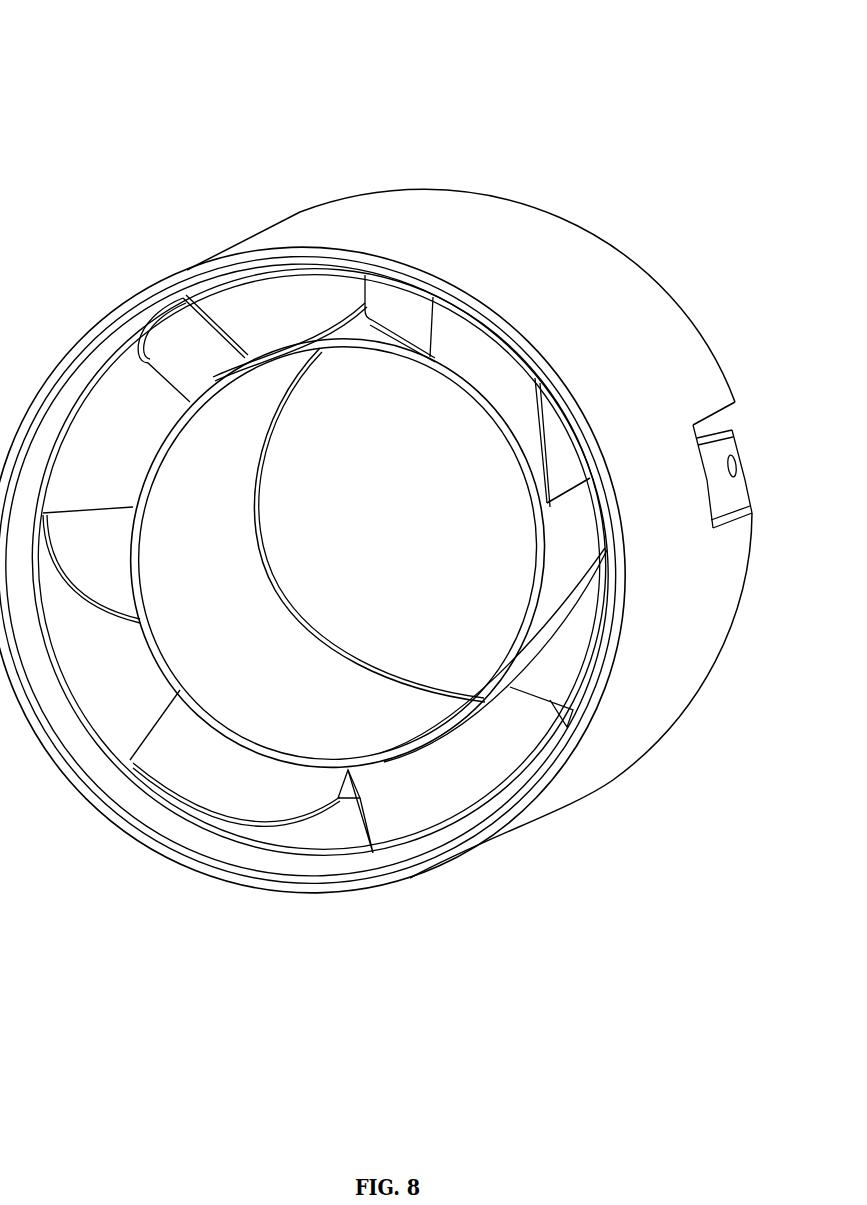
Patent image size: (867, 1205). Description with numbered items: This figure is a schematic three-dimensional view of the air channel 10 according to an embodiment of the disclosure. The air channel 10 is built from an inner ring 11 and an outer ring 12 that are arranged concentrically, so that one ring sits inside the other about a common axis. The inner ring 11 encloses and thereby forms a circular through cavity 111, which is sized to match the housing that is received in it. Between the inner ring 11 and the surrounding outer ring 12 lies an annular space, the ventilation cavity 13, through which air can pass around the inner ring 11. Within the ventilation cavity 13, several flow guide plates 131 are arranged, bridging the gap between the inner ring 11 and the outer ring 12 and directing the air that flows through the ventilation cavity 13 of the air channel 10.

The air channel 10 is at (80, 83).
The inner ring 11 is at (338, 649).
The circular through cavity 111 is at (411, 633).
The outer ring 12 is at (288, 903).
The ventilation cavity 13 is at (339, 522).
The flow guide plates 131 is at (190, 340).